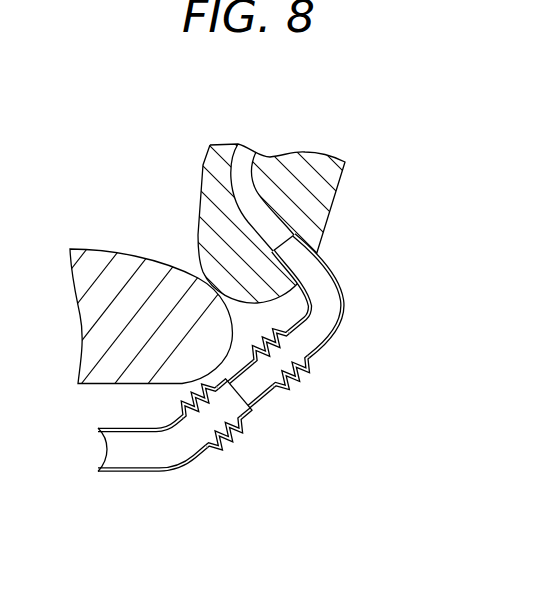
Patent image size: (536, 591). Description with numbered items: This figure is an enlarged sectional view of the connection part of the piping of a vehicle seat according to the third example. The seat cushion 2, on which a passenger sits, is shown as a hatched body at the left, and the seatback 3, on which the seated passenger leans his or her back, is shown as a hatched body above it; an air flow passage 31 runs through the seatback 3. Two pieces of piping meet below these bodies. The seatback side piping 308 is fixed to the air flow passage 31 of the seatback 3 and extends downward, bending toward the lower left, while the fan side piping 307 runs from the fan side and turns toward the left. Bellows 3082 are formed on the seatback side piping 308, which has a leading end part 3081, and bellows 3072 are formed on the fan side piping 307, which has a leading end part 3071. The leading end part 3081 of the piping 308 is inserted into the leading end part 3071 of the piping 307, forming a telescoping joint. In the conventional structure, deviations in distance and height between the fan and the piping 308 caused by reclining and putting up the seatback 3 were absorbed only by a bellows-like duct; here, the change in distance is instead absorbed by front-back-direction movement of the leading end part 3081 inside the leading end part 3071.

The seat cushion 2 is at (123, 267).
The seatback 3 is at (322, 188).
The air flow passage 31 is at (262, 212).
The fan side piping 307 is at (127, 472).
The seatback side piping 308 is at (340, 285).
The leading end part 3071 is at (249, 404).
The bellows 3072 is at (228, 452).
The leading end part 3081 is at (270, 389).
The bellows 3082 is at (300, 382).